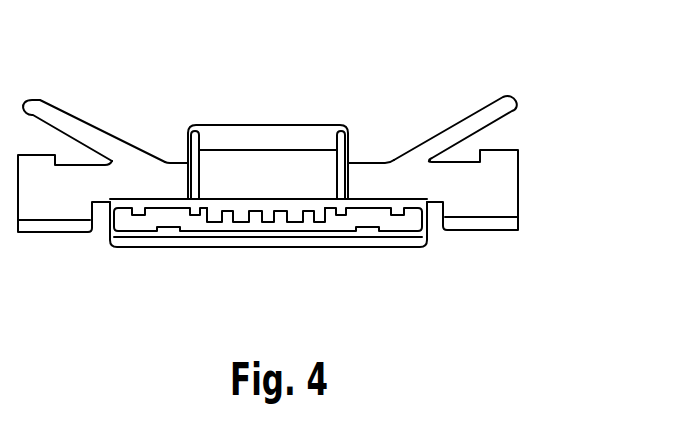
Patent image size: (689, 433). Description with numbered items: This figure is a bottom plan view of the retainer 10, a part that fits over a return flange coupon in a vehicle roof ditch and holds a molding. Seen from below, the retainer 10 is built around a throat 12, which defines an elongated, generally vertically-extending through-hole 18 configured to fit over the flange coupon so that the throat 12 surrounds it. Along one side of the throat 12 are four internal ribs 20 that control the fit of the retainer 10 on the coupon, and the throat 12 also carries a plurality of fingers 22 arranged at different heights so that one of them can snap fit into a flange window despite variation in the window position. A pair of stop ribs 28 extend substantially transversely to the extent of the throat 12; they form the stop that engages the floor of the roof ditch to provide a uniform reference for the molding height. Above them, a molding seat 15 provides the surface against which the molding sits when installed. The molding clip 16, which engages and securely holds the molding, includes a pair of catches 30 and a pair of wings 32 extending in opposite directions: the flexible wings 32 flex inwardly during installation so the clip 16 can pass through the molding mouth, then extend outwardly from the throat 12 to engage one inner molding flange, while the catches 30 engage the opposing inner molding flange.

The retainer 10 is at (174, 108).
The throat 12 is at (108, 231).
The molding seat 15 is at (263, 128).
The molding clip 16 is at (165, 163).
The through-hole 18 is at (220, 225).
The internal ribs 20 is at (397, 212).
The fingers 22 is at (217, 217).
The stop ribs 28 is at (197, 168).
The catches 30 is at (58, 229).
The wings 32 is at (42, 100).